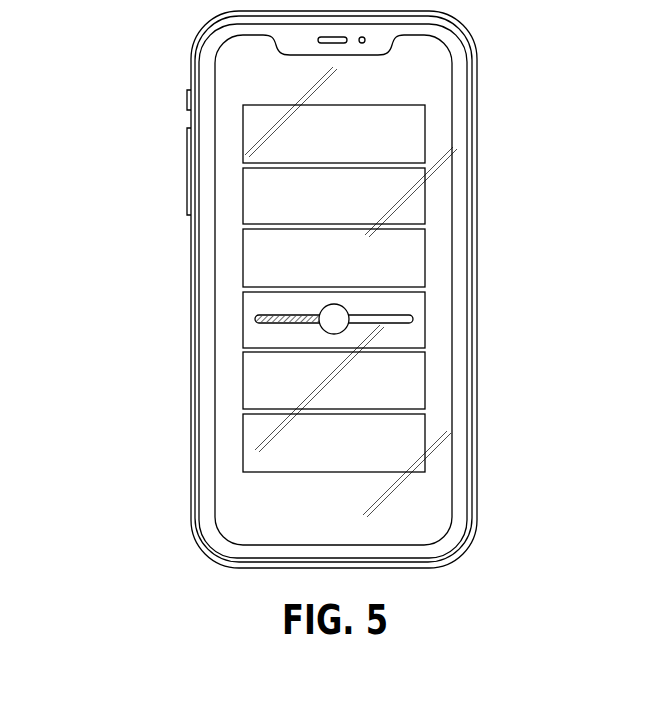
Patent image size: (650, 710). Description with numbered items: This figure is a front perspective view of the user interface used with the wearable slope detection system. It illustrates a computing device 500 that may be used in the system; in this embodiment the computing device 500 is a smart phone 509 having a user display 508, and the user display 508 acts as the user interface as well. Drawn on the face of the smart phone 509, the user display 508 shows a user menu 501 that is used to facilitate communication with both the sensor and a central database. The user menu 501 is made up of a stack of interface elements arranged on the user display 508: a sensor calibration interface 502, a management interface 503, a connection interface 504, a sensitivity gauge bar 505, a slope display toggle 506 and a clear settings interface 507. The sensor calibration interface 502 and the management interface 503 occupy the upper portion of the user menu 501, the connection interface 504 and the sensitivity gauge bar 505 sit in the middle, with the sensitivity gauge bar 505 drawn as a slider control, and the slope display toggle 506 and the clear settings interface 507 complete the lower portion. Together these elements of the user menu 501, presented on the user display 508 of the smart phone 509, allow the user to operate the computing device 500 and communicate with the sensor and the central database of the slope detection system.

The computing device 500 is at (82, 51).
The user menu 501 is at (423, 95).
The sensor calibration interface 502 is at (417, 125).
The management interface 503 is at (248, 209).
The connection interface 504 is at (417, 253).
The sensitivity gauge bar 505 is at (248, 338).
The slope display toggle 506 is at (417, 383).
The clear settings interface 507 is at (248, 442).
The user display 508 is at (232, 60).
The smart phone 509 is at (468, 30).